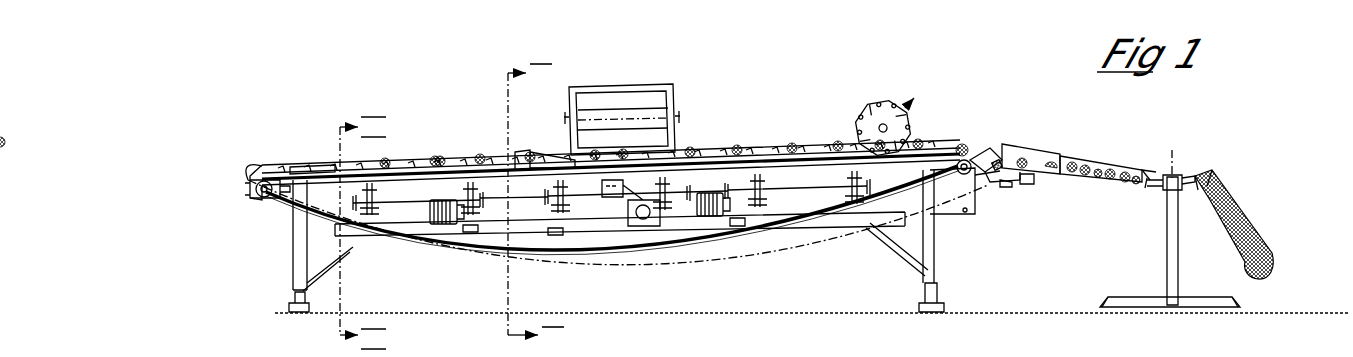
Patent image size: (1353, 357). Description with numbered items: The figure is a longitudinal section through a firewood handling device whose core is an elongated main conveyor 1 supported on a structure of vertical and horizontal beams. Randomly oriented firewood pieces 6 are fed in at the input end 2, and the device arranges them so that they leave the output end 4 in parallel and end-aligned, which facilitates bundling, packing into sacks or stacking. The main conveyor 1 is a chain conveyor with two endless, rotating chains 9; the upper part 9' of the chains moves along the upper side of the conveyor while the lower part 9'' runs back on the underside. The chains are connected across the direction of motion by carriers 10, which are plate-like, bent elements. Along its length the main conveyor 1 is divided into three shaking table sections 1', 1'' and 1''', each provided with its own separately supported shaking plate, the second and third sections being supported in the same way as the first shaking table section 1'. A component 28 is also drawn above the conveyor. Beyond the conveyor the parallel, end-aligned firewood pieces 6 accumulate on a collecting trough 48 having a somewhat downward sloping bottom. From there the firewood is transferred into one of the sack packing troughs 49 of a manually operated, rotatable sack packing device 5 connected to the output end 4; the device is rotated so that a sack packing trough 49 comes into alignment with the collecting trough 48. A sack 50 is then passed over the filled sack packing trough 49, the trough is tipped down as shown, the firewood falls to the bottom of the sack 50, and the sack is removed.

The main conveyor 1 is at (487, 207).
The first shaking table section 1' is at (381, 84).
The second shaking table section 1'' is at (700, 91).
The third shaking table section 1''' is at (883, 88).
The input end 2 is at (228, 192).
The output end 4 is at (992, 131).
The sack packing device 5 is at (1182, 155).
The firewood pieces 6 is at (440, 158).
The endless rotating chains 9 is at (612, 238).
The upper part of the chains 9' is at (800, 132).
The lower part of the chains 9'' is at (617, 227).
The carriers 10 is at (312, 163).
The hopper / feeding device 28 is at (625, 78).
The collecting trough 48 is at (1038, 158).
The sack packing trough 49 is at (1122, 170).
The sack 50 is at (1244, 226).